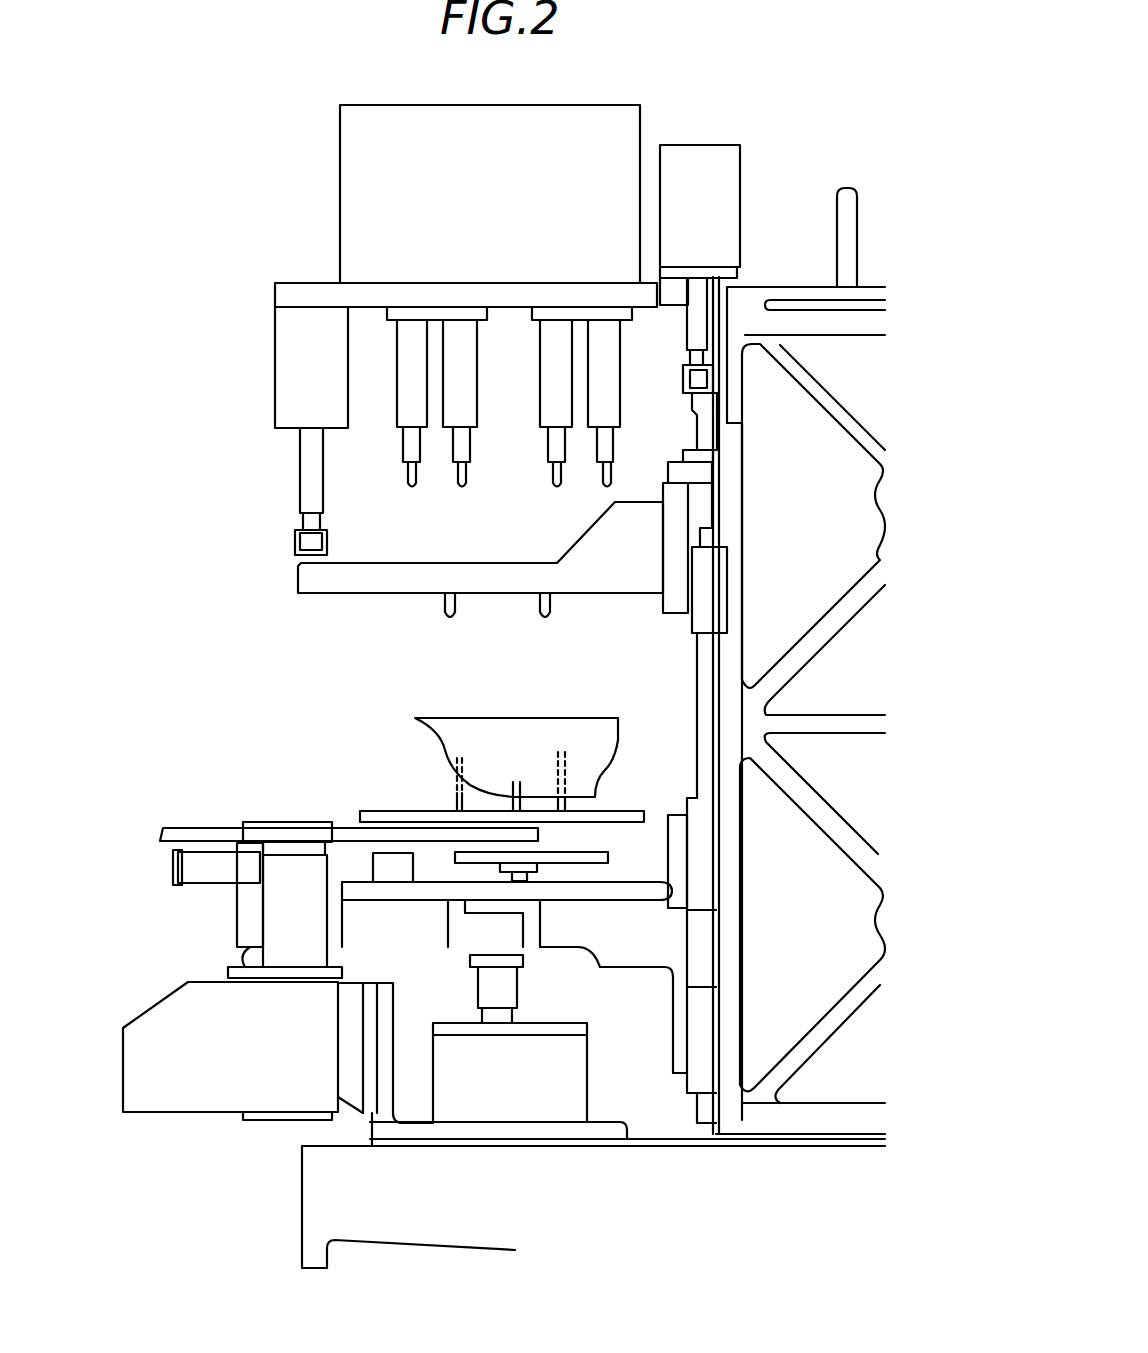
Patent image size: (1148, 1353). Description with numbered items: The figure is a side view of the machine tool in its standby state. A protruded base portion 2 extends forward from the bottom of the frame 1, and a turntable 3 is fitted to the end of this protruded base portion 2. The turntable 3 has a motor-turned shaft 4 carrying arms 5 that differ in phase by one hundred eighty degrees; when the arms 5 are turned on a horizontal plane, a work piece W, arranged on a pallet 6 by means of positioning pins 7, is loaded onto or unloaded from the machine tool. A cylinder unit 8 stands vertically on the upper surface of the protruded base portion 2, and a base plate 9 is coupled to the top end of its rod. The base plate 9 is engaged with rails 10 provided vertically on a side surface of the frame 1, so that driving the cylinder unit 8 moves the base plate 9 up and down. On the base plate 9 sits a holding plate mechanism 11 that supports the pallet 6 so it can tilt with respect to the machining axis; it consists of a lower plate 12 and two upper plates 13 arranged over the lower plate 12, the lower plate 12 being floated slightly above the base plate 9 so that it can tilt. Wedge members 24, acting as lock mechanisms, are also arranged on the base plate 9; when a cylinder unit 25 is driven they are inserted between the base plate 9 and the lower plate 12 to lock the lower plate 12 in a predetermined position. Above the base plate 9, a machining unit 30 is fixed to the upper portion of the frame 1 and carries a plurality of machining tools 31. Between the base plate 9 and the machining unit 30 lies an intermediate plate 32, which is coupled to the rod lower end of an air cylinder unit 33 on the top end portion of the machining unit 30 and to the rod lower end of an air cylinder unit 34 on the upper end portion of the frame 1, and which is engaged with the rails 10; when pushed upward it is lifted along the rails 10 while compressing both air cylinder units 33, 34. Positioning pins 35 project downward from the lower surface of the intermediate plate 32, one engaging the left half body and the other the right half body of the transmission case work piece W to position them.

The frame 1 is at (780, 290).
The protruded base portion 2 is at (333, 1195).
The turntable 3 is at (196, 990).
The shaft 4 is at (285, 858).
The arms 5 is at (350, 835).
The pallet 6 is at (425, 815).
The positioning pins 7 is at (457, 770).
The cylinder unit 8 is at (458, 1045).
The base plate 9 is at (660, 893).
The rails 10 is at (710, 657).
The holding plate mechanism 11 is at (607, 867).
The lower plate 12 is at (540, 870).
The upper plates 13 is at (592, 855).
The wedge members 24 is at (518, 882).
The cylinder unit 25 is at (388, 870).
The machining unit 30 is at (368, 178).
The machining tools 31 is at (467, 483).
The intermediate plate 32 is at (367, 575).
The air cylinder unit 33 is at (298, 388).
The air cylinder unit 34 is at (715, 160).
The positioning pins 35 is at (540, 605).
The work piece W is at (566, 725).